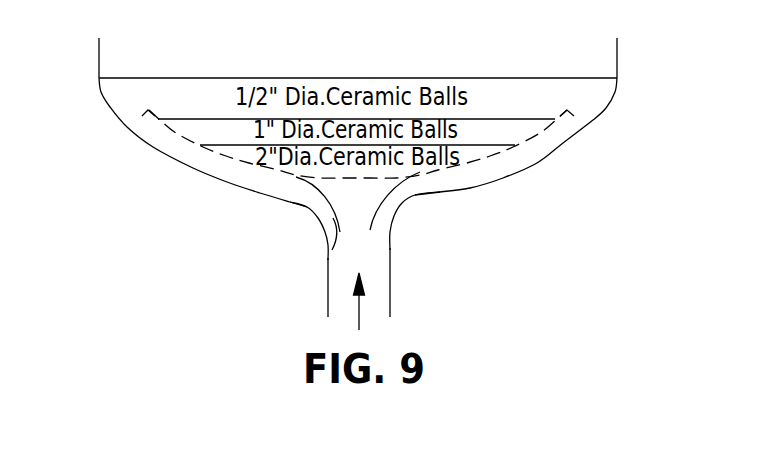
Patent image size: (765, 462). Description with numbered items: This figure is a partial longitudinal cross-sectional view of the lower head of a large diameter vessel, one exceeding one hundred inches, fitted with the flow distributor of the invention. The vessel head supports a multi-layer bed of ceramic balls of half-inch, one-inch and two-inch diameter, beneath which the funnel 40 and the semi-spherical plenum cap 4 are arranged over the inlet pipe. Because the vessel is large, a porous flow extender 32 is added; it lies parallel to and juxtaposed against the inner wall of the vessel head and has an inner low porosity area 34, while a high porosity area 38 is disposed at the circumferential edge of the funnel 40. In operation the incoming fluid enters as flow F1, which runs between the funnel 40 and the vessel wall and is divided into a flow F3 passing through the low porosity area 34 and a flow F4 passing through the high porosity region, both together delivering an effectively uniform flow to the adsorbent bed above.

The semi-spherical plenum cap 4 is at (377, 186).
The flow extender 32 is at (548, 142).
The inner porosity area 34 is at (505, 162).
The high porosity area 38 is at (411, 192).
The funnel 40 is at (317, 215).
The flow segment F1 is at (333, 247).
The flow F3 is at (228, 163).
The flow F4 is at (133, 123).